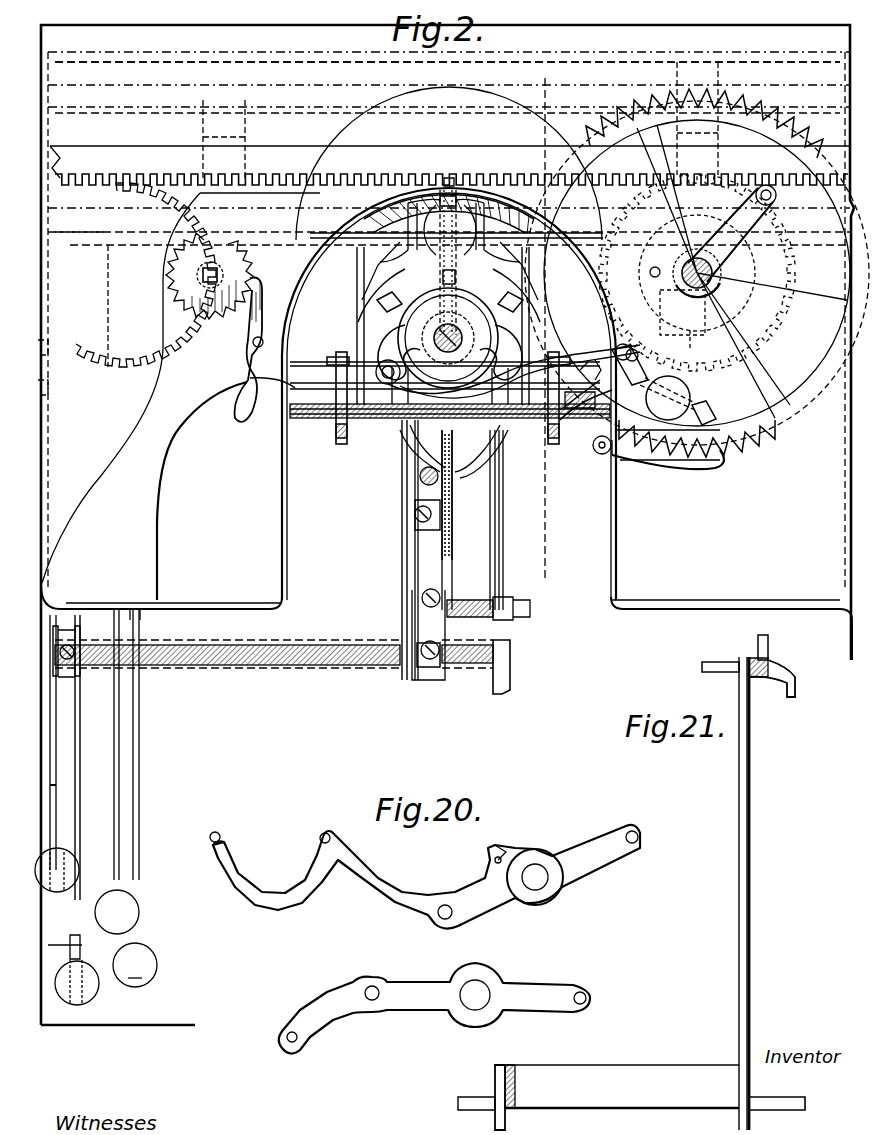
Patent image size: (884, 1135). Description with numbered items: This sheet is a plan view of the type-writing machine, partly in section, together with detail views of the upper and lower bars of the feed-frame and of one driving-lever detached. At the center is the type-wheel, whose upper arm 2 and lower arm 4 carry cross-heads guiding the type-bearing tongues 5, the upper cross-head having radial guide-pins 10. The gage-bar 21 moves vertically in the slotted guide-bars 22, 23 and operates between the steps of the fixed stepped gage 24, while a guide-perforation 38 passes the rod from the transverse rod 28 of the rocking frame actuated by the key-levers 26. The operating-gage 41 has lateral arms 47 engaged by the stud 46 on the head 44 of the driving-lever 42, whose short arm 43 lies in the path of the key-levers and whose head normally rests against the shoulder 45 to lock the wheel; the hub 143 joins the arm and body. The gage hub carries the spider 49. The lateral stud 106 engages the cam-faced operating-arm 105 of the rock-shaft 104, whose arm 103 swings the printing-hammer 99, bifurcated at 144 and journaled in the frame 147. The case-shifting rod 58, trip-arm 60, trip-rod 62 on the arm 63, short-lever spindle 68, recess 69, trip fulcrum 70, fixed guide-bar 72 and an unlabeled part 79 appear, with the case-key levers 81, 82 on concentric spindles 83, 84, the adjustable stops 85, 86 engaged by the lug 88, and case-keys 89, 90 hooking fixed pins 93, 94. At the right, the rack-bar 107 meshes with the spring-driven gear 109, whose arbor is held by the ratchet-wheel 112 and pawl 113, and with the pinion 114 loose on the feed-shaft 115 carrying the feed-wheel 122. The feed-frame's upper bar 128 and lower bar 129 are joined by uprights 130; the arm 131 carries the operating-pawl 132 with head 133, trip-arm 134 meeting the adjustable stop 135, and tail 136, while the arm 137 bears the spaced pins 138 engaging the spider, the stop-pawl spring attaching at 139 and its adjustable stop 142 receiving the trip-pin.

In FIG. 2, the upper arm 2 is at (450, 230).
In FIG. 2, the lower arm 4 is at (534, 571).
In FIG. 2, the type-bearing tongues 5 is at (407, 180).
In FIG. 2, the radial guide-pins 10 is at (464, 174).
In FIG. 2, the gage-bar 21 is at (468, 294).
In FIG. 2, the slotted guide-bar 22 is at (446, 178).
In FIG. 2, the slotted guide-bar 23 is at (445, 262).
In FIG. 2, the stepped gage 24 is at (530, 168).
In FIG. 2, the key-levers 26 is at (114, 762).
In FIG. 2, the transverse rod 28 is at (238, 58).
In FIG. 2, the guide-perforation 38 is at (450, 330).
In FIG. 2, the operating-gage 41 is at (432, 300).
In FIG. 21, the driving-lever 42 is at (755, 893).
In FIG. 21, the short arm 43 is at (494, 1082).
In FIG. 2, the head 44 is at (449, 292).
In FIG. 21, the head 44 is at (779, 664).
In FIG. 2, the shoulder 45 is at (443, 309).
In FIG. 2, the stud 46 is at (450, 262).
In FIG. 21, the stud 46 is at (756, 636).
In FIG. 2, the lateral arms 47 is at (464, 307).
In FIG. 2, the spider 49 is at (450, 364).
In FIG. 2, the rod 58 is at (500, 526).
In FIG. 2, the trip-arm 60 is at (500, 554).
In FIG. 2, the trip-rod 62 is at (314, 111).
In FIG. 2, the arm 63 is at (91, 230).
In FIG. 2, the horizontal spindle 68 is at (297, 336).
In FIG. 2, the recess 69 is at (294, 392).
In FIG. 2, the fulcrum 70 is at (402, 430).
In FIG. 2, the fixed guide-bar 72 is at (420, 474).
In FIG. 2, the screw 79 is at (430, 511).
In FIG. 2, the case-key lever 81 is at (54, 764).
In FIG. 2, the case-key lever 82 is at (78, 813).
In FIG. 2, the spindle 83 is at (476, 660).
In FIG. 2, the hollow spindle 84 is at (296, 640).
In FIG. 2, the adjustable stop 85 is at (430, 670).
In FIG. 2, the adjustable stop 86 is at (422, 597).
In FIG. 2, the lug 88 is at (441, 654).
In FIG. 2, the case-key 89 is at (78, 873).
In FIG. 2, the case-key 90 is at (90, 998).
In FIG. 2, the fixed pin 93 is at (54, 787).
In FIG. 2, the fixed pin 94 is at (52, 944).
In FIG. 2, the printing-hammer 99 is at (445, 480).
In FIG. 2, the arm 103 is at (552, 440).
In FIG. 2, the rock-shaft 104 is at (364, 415).
In FIG. 2, the cam-faced operating-arm 105 is at (338, 387).
In FIG. 2, the lateral stud 106 is at (590, 364).
In FIG. 21, the lateral stud 106 is at (706, 661).
In FIG. 2, the rack-bar 107 is at (315, 148).
In FIG. 2, the gear 109 is at (170, 224).
In FIG. 2, the ratchet-wheel 112 is at (230, 240).
In FIG. 2, the pawl 113 is at (246, 358).
In FIG. 2, the pinion 114 is at (790, 272).
In FIG. 2, the feed-shaft 115 is at (710, 272).
In FIG. 2, the feed-wheel 122 is at (785, 450).
In FIG. 2, the upper bar 128 is at (778, 206).
In FIG. 20, the upper bar 128 is at (590, 862).
In FIG. 20, the lower bar 129 is at (535, 1006).
In FIG. 2, the uprights 130 is at (586, 400).
In FIG. 2, the arm 131 is at (599, 456).
In FIG. 20, the arm 131 is at (338, 1010).
In FIG. 2, the operating-pawl 132 is at (667, 462).
In FIG. 2, the head 133 is at (606, 434).
In FIG. 2, the trip-arm 134 is at (622, 388).
In FIG. 2, the adjustable stop 135 is at (640, 366).
In FIG. 2, the tail 136 is at (696, 462).
In FIG. 2, the arm 137 is at (560, 344).
In FIG. 20, the arm 137 is at (392, 872).
In FIG. 2, the spaced pins 138 is at (388, 360).
In FIG. 20, the spaced pins 138 is at (326, 832).
In FIG. 2, the spring connection 139 is at (634, 348).
In FIG. 20, the spring connection 139 is at (504, 852).
In FIG. 2, the adjustable stop 142 is at (583, 384).
In FIG. 21, the hub 143 is at (609, 1065).
In FIG. 2, the bifurcated lower end 144 is at (502, 450).
In FIG. 2, the frame 147 is at (282, 508).